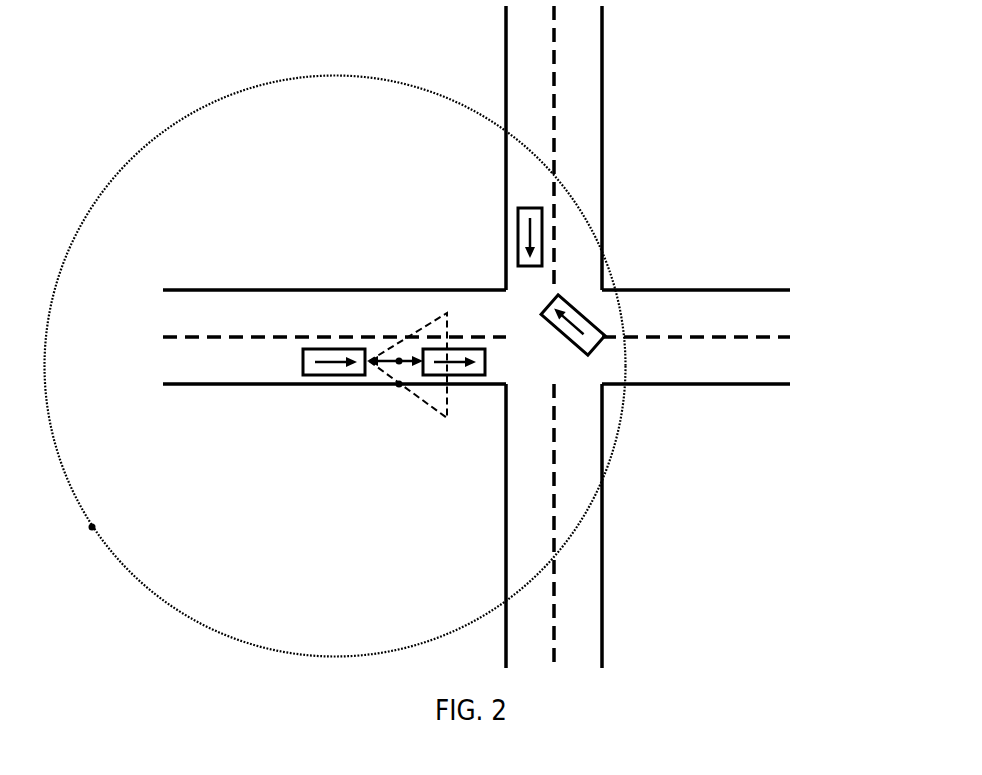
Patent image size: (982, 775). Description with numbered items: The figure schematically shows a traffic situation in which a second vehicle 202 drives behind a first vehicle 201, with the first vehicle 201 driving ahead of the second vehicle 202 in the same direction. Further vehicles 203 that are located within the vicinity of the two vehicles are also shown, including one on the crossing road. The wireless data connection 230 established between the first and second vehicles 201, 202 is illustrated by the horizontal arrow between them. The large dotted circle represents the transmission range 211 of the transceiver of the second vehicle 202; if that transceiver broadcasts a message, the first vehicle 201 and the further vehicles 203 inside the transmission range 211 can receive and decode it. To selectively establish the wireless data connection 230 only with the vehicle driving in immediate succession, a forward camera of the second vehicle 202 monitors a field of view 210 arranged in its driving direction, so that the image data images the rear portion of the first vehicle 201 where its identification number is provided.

The first vehicle 201 is at (472, 378).
The second vehicle 202 is at (318, 378).
The further vehicles 203 is at (516, 232).
The field of view 210 is at (399, 388).
The transmission range 211 is at (92, 527).
The wireless data connection 230 is at (399, 358).